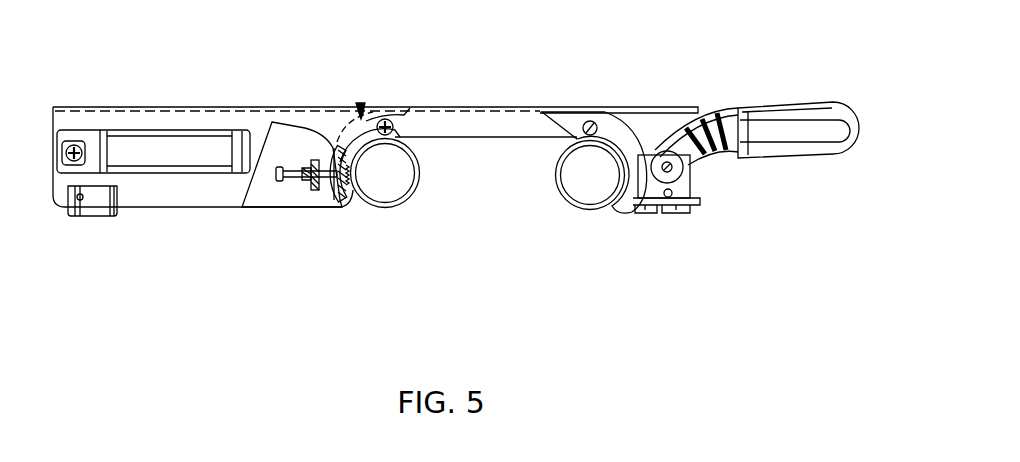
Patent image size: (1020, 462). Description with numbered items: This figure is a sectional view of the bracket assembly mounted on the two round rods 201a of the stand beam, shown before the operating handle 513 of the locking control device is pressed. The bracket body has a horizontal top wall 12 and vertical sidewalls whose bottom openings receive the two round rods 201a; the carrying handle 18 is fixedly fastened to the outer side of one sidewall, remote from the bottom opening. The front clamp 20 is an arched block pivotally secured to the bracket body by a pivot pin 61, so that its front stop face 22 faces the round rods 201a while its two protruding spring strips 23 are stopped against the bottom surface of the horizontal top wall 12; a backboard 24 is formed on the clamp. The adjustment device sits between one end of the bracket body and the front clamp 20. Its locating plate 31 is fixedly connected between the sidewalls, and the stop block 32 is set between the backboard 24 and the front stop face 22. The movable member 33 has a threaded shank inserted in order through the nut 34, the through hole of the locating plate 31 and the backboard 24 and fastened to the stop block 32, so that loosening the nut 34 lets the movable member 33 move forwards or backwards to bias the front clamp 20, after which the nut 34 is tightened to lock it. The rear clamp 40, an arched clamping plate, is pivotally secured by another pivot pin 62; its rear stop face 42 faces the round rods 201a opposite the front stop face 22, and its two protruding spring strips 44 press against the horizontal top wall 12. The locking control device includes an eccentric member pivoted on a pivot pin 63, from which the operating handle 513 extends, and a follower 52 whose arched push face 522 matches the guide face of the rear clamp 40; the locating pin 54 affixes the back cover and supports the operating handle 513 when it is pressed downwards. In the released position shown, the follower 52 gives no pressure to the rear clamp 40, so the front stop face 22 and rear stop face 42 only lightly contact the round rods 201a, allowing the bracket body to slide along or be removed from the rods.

The horizontal top wall 12 is at (478, 107).
The carrying handle 18 is at (136, 148).
The front clamp 20 is at (360, 103).
The front stop face 22 is at (355, 153).
The protruding spring strips 23 is at (408, 118).
The backboard 24 is at (318, 192).
The locating plate 31 is at (324, 150).
The stop block 32 is at (341, 197).
The movable member 33 is at (283, 182).
The nut 34 is at (310, 168).
The rear clamp 40 is at (621, 130).
The rear stop face 42 is at (607, 203).
The protruding spring strips 44 is at (566, 118).
The follower 52 is at (668, 213).
The locating pin 54 is at (690, 215).
The pivot pin 61 is at (386, 119).
The pivot pin 62 is at (590, 121).
The pivot pin 63 is at (669, 169).
The round rods 201a is at (412, 199).
The operating handle 513 is at (798, 97).
The push face 522 is at (640, 212).